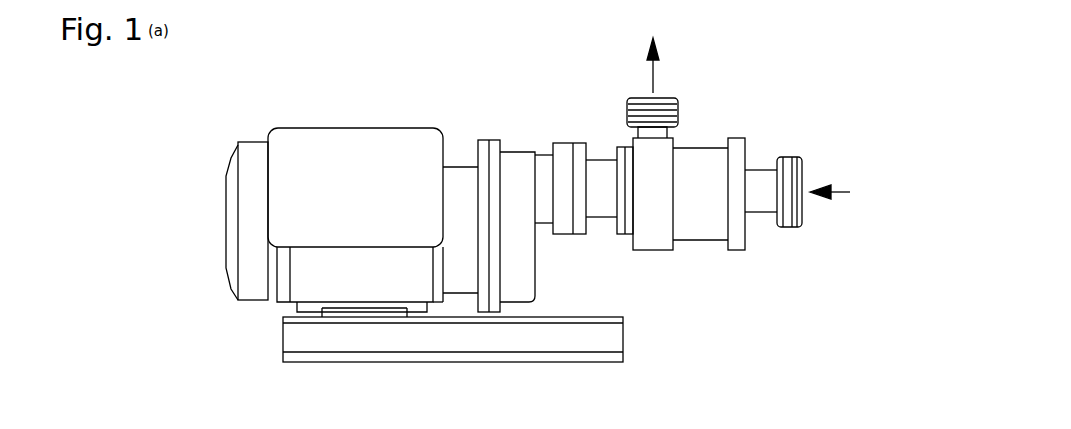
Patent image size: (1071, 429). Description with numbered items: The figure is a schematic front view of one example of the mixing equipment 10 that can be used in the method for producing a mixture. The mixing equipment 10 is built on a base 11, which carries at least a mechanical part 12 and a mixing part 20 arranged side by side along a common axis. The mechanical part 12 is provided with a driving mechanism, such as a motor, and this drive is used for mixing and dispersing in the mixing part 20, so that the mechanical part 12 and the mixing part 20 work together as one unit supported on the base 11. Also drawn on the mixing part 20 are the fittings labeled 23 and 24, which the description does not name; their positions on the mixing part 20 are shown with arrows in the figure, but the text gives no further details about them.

The mixing equipment 10 is at (478, 129).
The base 11 is at (485, 342).
The mechanical part 12 is at (373, 148).
The mixing part 20 is at (707, 148).
The suction port 23 is at (792, 228).
The discharge port 24 is at (665, 95).